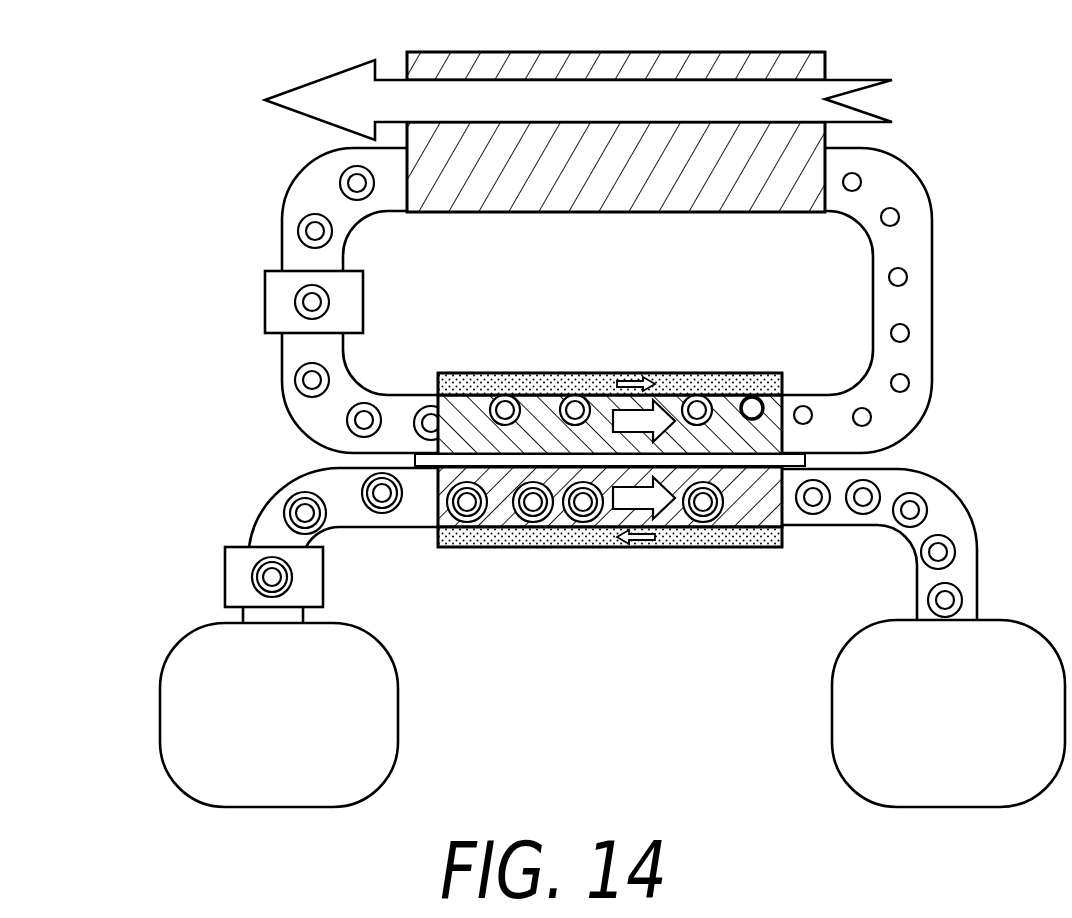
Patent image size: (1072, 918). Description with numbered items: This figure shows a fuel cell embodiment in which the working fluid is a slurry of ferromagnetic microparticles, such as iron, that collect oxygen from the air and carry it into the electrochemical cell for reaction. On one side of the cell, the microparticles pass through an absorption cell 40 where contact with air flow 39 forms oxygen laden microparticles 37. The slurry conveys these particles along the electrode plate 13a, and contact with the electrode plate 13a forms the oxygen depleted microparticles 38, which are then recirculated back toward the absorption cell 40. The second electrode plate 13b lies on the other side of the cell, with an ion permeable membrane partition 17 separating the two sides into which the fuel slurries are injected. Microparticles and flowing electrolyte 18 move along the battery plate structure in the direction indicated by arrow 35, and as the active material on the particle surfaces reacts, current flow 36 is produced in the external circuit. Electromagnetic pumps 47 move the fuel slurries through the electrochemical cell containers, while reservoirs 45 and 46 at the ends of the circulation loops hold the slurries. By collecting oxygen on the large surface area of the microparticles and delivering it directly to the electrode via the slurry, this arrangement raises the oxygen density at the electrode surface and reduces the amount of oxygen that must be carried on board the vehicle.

The electrode plate 13a is at (738, 380).
The electrode plate 13b is at (613, 540).
The ion permeable membrane partition 17 is at (648, 303).
The electrolyte liquid 18 is at (500, 517).
The arrow 35 is at (663, 500).
The current flow 36 is at (638, 382).
The oxygen laden microparticles 37 is at (298, 228).
The oxygen depleted microparticles 38 is at (908, 383).
The air flow 39 is at (827, 97).
The absorption cell 40 is at (788, 182).
The first reservoir 45 is at (279, 715).
The second reservoir 46 is at (948, 713).
The electromagnetic pumps 47 is at (269, 320).